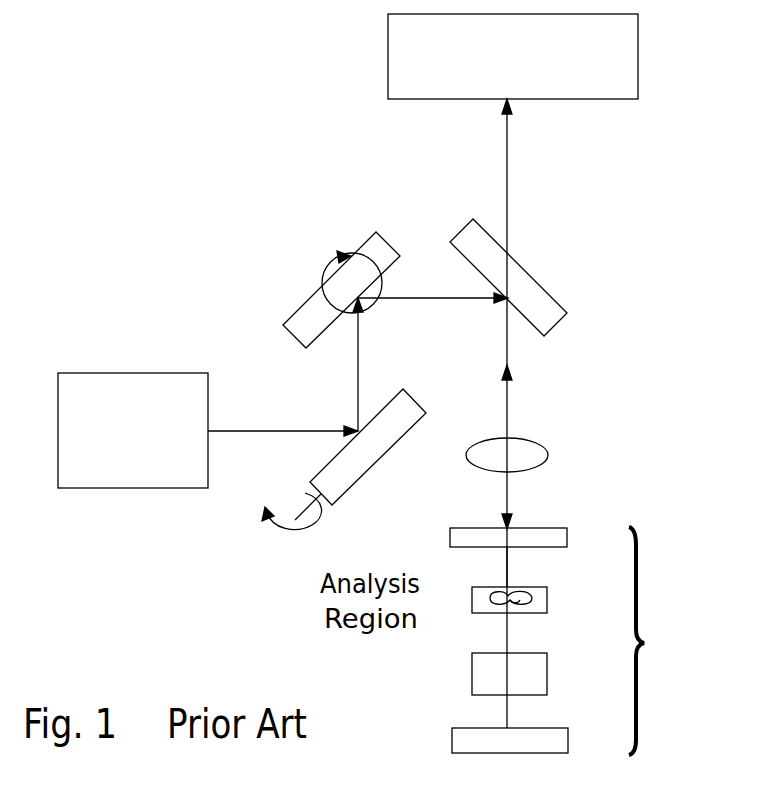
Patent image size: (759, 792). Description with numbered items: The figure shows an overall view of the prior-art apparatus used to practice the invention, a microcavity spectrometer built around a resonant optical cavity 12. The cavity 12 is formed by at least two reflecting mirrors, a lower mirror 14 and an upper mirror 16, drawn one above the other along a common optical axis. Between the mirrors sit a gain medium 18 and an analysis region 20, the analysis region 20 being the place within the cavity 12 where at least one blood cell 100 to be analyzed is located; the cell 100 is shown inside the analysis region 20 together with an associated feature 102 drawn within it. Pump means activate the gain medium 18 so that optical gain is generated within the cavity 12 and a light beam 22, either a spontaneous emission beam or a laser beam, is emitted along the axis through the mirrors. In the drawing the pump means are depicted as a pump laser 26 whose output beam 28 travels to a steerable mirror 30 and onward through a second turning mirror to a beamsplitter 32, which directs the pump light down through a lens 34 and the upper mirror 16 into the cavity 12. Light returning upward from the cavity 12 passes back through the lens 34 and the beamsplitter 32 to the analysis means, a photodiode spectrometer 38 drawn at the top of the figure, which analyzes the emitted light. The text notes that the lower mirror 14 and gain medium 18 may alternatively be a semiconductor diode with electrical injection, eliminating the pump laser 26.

The photodiode spectrometer 38 is at (513, 56).
The beamsplitter 32 is at (590, 277).
The pump laser 26 is at (133, 430).
The pump beam 28 is at (283, 417).
The rotatable mirror 30 is at (344, 459).
The lens 34 is at (534, 450).
The upper mirror 16 is at (487, 537).
The light beam 22 is at (526, 567).
The analysis region 20 is at (488, 603).
The sample 102 is at (537, 593).
The blood cell 100 is at (517, 603).
The gain medium 18 is at (490, 674).
The lower mirror 14 is at (490, 742).
The resonant optical cavity 12 is at (680, 641).